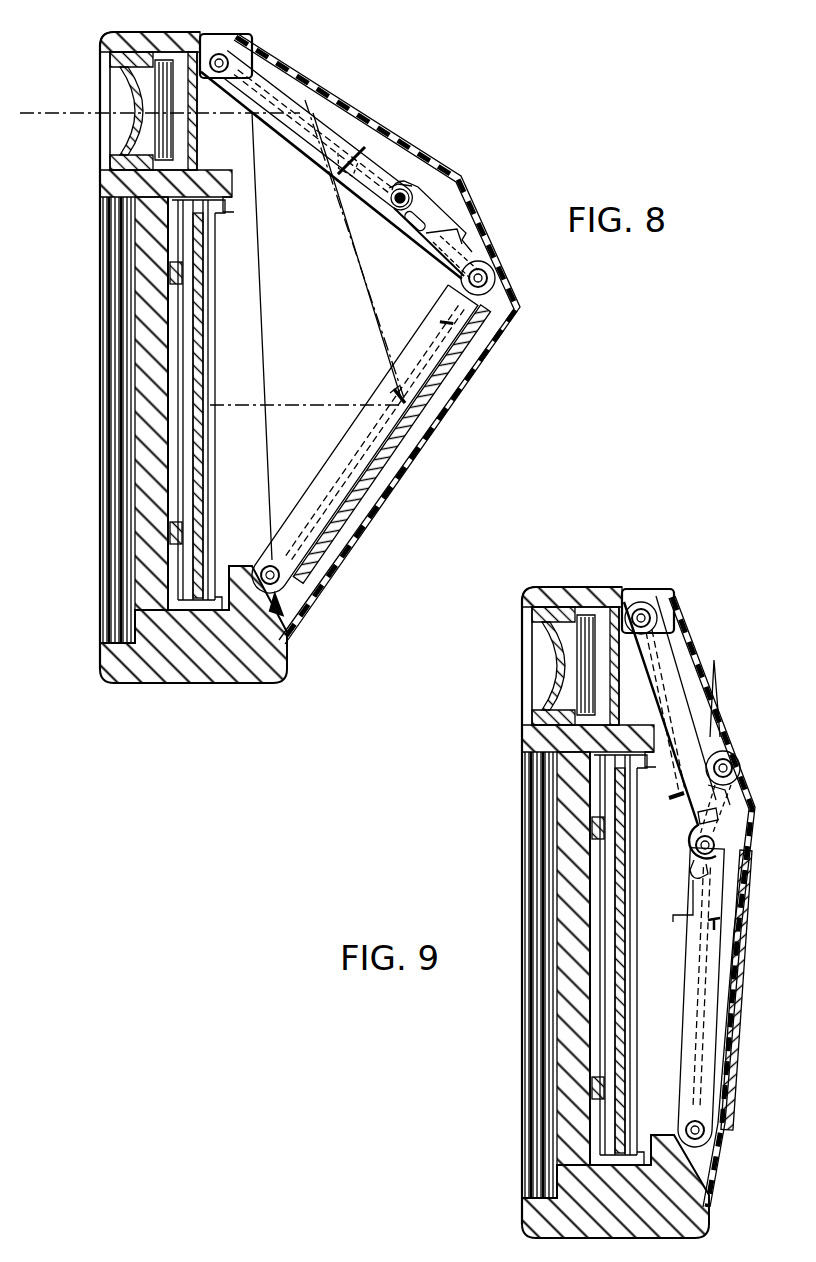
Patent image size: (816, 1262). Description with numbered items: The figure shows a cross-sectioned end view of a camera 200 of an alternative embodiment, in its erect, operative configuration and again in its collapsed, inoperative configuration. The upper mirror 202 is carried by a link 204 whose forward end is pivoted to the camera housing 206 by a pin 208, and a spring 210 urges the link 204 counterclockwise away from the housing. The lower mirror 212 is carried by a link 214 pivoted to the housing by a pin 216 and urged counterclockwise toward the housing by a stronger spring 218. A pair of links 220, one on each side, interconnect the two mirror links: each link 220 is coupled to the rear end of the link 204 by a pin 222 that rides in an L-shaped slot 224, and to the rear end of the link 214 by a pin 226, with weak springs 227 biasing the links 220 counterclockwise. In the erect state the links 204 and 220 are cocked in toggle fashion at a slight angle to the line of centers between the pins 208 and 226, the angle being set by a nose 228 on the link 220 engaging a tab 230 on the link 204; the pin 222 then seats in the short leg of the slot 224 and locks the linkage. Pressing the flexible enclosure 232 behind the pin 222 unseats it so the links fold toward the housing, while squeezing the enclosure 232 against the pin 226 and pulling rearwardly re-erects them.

In FIG. 8, the camera 200 is at (120, 695).
In FIG. 9, the camera 200 is at (552, 912).
In FIG. 8, the upper mirror 202 is at (345, 148).
In FIG. 9, the upper mirror 202 is at (665, 657).
In FIG. 8, the link 204 is at (341, 186).
In FIG. 9, the link 204 is at (650, 683).
In FIG. 8, the camera housing 206 is at (100, 407).
In FIG. 9, the camera housing 206 is at (490, 975).
In FIG. 8, the pin 208 is at (254, 50).
In FIG. 9, the pin 208 is at (651, 593).
In FIG. 8, the spring 210 is at (307, 140).
In FIG. 9, the spring 210 is at (595, 639).
In FIG. 8, the lower mirror 212 is at (450, 350).
In FIG. 9, the lower mirror 212 is at (733, 905).
In FIG. 8, the link 214 is at (347, 441).
In FIG. 9, the link 214 is at (684, 978).
In FIG. 8, the pin 216 is at (283, 575).
In FIG. 9, the pin 216 is at (704, 1130).
In FIG. 8, the spring 218 is at (342, 473).
In FIG. 9, the spring 218 is at (710, 948).
In FIG. 8, the link 220 is at (418, 240).
In FIG. 8, the pin 222 is at (423, 195).
In FIG. 9, the pin 222 is at (717, 845).
In FIG. 8, the L-shaped slot 224 is at (406, 223).
In FIG. 9, the L-shaped slot 224 is at (712, 868).
In FIG. 8, the pin 226 is at (470, 278).
In FIG. 9, the pin 226 is at (734, 768).
In FIG. 8, the spring 227 is at (458, 245).
In FIG. 9, the spring 227 is at (737, 783).
In FIG. 8, the nose 228 is at (363, 212).
In FIG. 9, the nose 228 is at (678, 908).
In FIG. 8, the tab 230 is at (400, 176).
In FIG. 9, the tab 230 is at (700, 816).
In FIG. 8, the flexible enclosure 232 is at (352, 103).
In FIG. 9, the flexible enclosure 232 is at (722, 672).